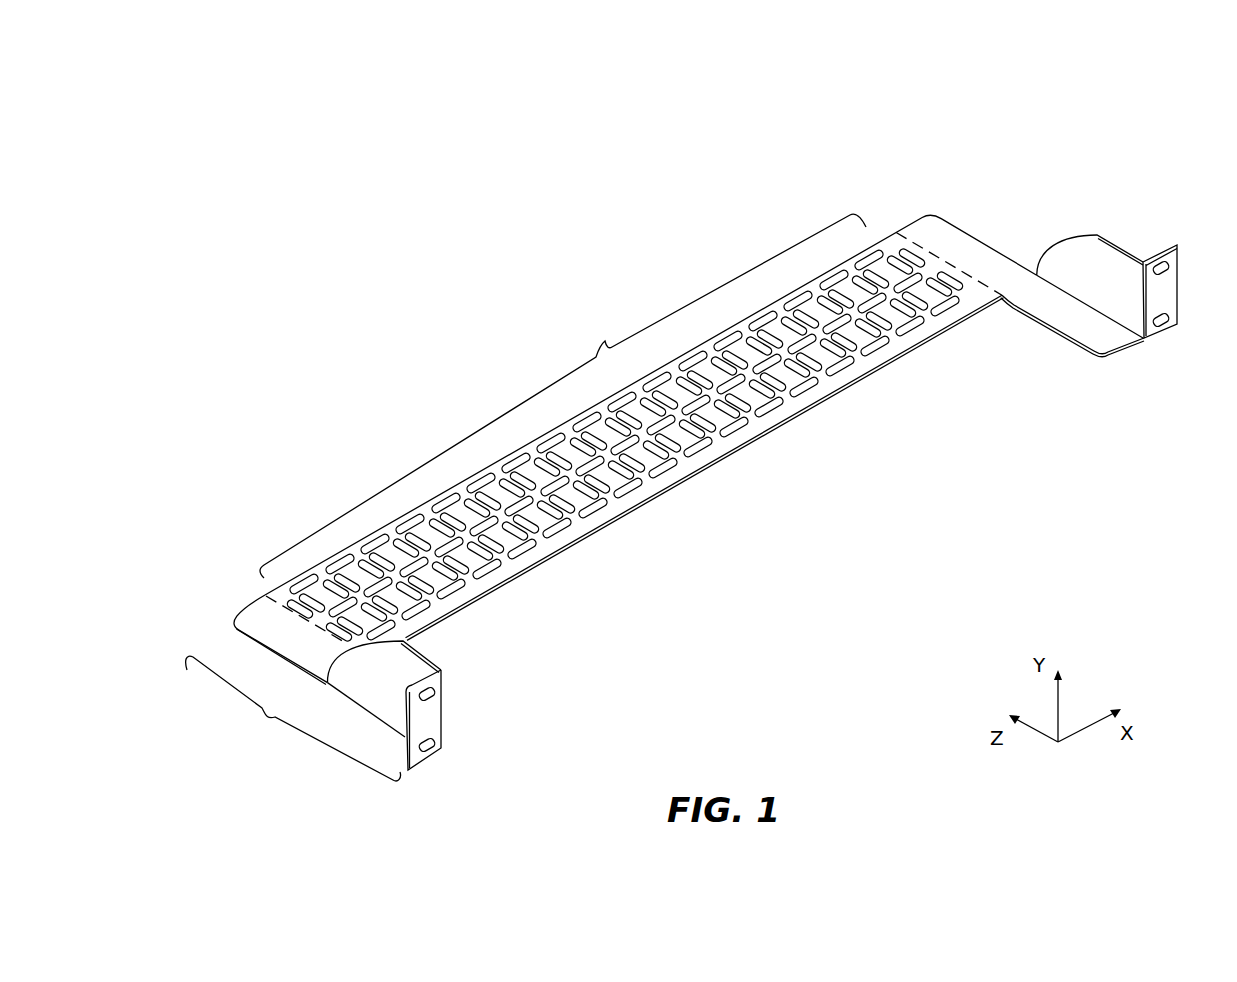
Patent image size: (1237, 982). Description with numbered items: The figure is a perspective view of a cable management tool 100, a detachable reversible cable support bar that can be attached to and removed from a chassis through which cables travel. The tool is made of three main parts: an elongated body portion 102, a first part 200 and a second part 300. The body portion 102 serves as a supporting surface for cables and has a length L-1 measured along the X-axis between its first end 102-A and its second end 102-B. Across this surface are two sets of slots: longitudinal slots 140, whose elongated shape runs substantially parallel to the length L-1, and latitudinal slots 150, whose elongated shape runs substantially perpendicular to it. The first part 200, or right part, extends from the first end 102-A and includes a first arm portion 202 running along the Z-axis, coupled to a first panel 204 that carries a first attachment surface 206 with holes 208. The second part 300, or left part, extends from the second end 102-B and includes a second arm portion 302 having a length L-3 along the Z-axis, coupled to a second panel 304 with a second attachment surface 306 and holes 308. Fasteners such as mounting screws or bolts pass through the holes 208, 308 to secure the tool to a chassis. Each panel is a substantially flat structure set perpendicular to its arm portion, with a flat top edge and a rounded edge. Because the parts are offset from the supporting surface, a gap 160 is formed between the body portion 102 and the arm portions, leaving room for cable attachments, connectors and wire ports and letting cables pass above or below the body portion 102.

The cable management tool 100 is at (694, 436).
The body portion 102 is at (621, 410).
The first end 102-A is at (897, 214).
The second end 102-B is at (248, 566).
The longitudinal slots 140 is at (533, 513).
The latitudinal slots 150 is at (650, 410).
The gap 160 is at (823, 563).
The first part 200 is at (1108, 290).
The first arm portion 202 is at (1078, 328).
The first panel 204 is at (1100, 268).
The first attachment surface 206 is at (1173, 300).
The holes 208 is at (1167, 314).
The second part 300 is at (339, 676).
The second arm portion 302 is at (262, 628).
The second panel 304 is at (398, 668).
The second attachment surface 306 is at (450, 733).
The holes 308 is at (425, 738).
The length of body portion L-1 is at (605, 341).
The length of second arm portion L-3 is at (268, 719).